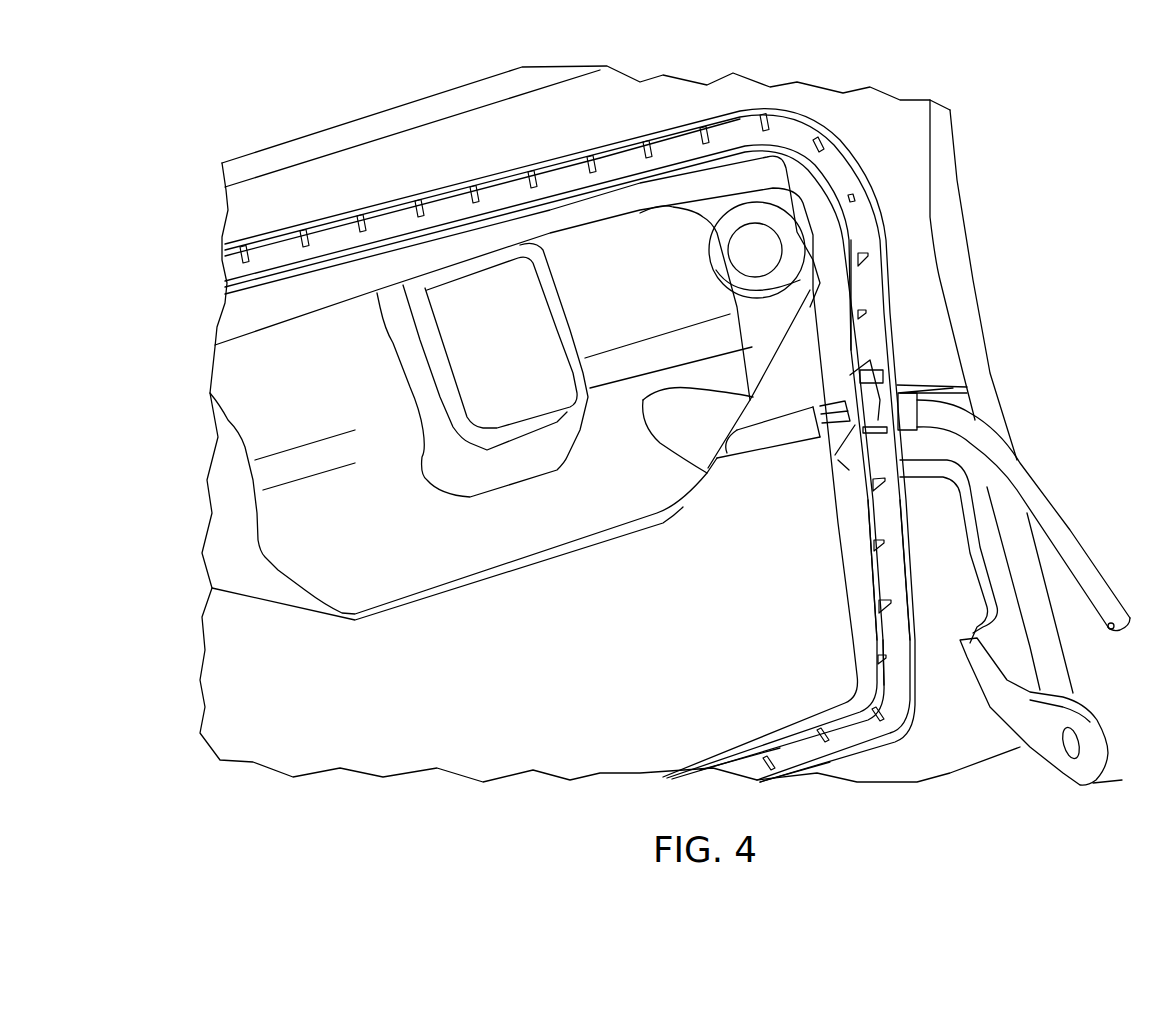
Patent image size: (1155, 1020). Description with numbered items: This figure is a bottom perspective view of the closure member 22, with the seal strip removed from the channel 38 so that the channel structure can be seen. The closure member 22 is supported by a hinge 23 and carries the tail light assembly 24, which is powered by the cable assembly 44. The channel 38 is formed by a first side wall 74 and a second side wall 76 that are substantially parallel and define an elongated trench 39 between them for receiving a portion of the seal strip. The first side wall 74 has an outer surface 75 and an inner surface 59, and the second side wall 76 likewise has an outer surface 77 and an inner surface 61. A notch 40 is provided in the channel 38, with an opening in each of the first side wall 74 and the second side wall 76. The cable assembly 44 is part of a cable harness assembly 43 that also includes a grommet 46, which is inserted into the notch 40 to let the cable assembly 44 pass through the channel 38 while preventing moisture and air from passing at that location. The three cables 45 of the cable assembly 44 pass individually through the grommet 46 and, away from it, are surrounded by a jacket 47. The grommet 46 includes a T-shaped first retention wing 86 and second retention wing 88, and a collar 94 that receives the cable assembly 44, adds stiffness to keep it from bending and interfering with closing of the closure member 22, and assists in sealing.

The closure member 22 is at (555, 758).
The hinge 23 is at (1027, 723).
The tail light assembly 24 is at (503, 550).
The channel 38 is at (611, 476).
The trench 39 is at (888, 577).
The notch 40 is at (835, 467).
The cable harness assembly 43 is at (790, 460).
The cable assembly 44 is at (740, 458).
The cables 45 is at (826, 405).
The grommet 46 is at (882, 402).
The jacket 47 is at (1018, 467).
The inner surface 59 is at (773, 743).
The inner surface 61 is at (897, 630).
The first side wall 74 is at (848, 578).
The outer surface 75 is at (853, 627).
The second side wall 76 is at (858, 748).
The outer surface 77 is at (910, 593).
The first retention wing 86 is at (870, 375).
The second retention wing 88 is at (873, 447).
The collar 94 is at (910, 413).